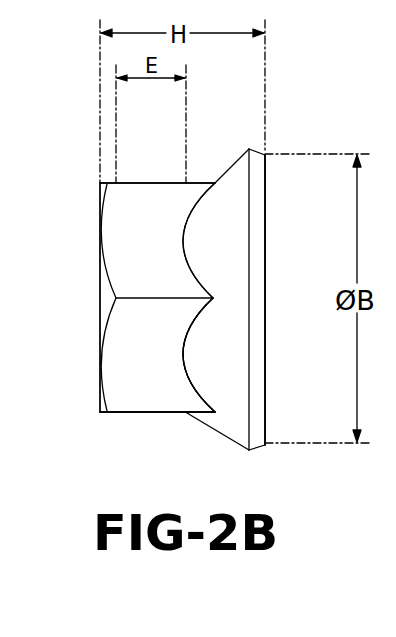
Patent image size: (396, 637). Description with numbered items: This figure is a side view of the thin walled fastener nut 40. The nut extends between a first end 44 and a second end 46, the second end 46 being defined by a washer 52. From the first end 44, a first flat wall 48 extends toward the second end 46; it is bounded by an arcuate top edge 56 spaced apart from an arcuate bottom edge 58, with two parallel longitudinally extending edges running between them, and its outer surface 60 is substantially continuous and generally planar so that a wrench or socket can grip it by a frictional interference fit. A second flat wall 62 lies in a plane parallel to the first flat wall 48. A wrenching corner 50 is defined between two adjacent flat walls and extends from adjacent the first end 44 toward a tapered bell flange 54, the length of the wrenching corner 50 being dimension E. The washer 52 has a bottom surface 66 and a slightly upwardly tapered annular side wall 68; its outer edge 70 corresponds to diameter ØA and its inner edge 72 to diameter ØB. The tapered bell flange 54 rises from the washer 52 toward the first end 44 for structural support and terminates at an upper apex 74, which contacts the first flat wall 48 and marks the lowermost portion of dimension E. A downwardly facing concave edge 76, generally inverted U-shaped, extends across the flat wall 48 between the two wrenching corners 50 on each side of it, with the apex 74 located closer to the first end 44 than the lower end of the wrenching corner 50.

The fastener nut 40 is at (150, 434).
The first end 44 is at (96, 305).
The second end 46 is at (270, 300).
The first flat wall 48 is at (138, 414).
The wrenching corner 50 is at (135, 300).
The washer 52 is at (264, 231).
The tapered bell flange 54 is at (222, 425).
The arcuate top edge 56 is at (100, 193).
The arcuate bottom edge 58 is at (187, 262).
The outer surface 60 is at (142, 433).
The second flat wall 62 is at (148, 183).
The bottom surface 66 is at (305, 300).
The tapered annular side wall 68 is at (262, 448).
The outer edge 70 is at (249, 147).
The inner edge 72 is at (265, 152).
The upper apex 74 is at (183, 245).
The downwardly facing concave edge 76 is at (192, 393).